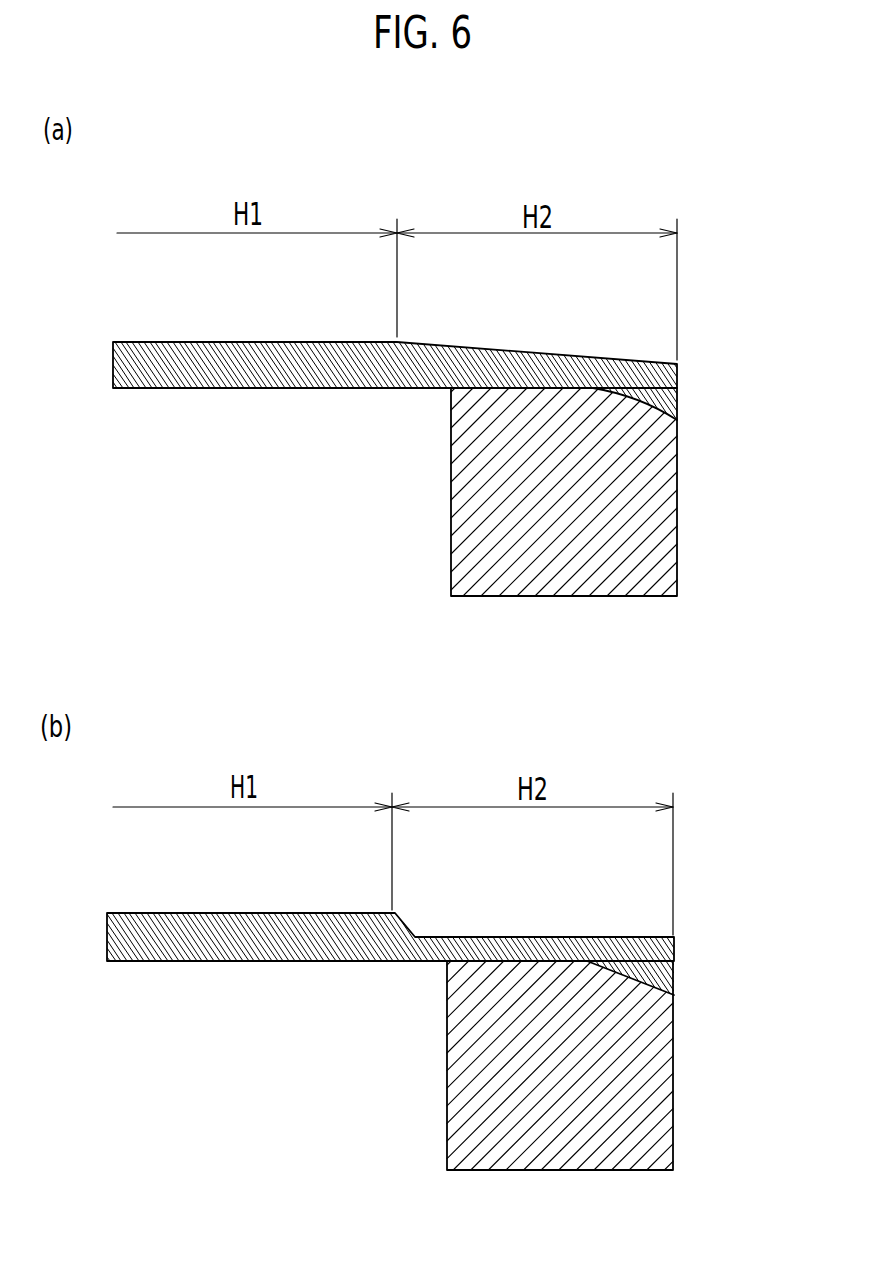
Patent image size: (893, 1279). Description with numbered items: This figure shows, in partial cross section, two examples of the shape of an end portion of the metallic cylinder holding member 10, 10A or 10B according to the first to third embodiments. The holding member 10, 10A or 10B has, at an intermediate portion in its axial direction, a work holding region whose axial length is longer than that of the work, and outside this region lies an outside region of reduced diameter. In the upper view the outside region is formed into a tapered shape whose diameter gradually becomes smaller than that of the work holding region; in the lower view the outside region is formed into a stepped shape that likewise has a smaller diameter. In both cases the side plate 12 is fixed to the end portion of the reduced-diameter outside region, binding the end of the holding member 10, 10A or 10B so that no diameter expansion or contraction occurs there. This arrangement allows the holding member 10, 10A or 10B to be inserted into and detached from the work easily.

The metallic cylinder holding member 10 is at (392, 698).
The metallic cylinder holding member 10A is at (392, 651).
The metallic cylinder holding member 10B is at (230, 378).
The side plate 12 is at (668, 500).